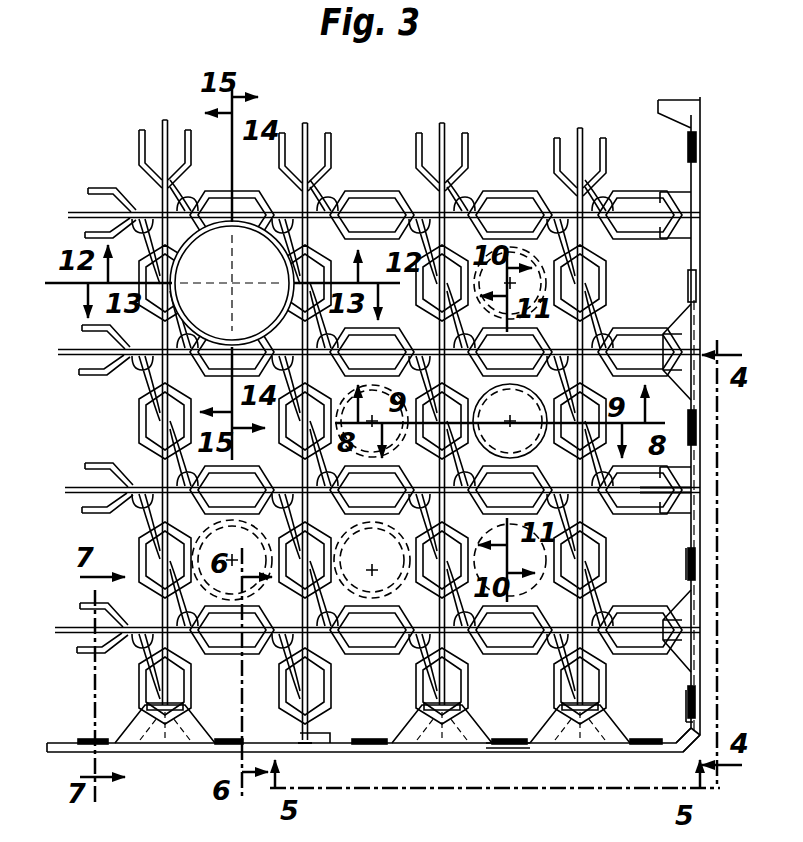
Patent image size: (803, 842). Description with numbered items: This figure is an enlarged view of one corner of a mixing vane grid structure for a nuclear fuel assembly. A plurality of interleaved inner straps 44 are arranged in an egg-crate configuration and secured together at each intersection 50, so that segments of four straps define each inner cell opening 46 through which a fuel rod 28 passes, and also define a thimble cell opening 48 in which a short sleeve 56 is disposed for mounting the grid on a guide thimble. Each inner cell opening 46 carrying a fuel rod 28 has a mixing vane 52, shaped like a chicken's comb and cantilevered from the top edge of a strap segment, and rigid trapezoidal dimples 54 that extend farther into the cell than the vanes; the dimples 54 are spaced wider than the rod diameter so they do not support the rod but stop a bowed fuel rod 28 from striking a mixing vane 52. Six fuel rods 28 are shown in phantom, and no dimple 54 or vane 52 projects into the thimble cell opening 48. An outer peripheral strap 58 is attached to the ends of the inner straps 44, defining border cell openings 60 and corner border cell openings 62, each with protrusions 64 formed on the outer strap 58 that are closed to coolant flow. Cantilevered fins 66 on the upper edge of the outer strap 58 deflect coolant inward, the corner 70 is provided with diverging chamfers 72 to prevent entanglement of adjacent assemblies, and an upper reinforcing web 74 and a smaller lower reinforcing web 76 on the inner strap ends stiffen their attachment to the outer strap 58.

The fuel rod 28 is at (560, 320).
The inner strap 44 is at (447, 133).
The inner cell opening 46 is at (590, 342).
The thimble cell opening 48 is at (148, 213).
The intersection 50 is at (590, 240).
The mixing vane 52 is at (460, 188).
The dimple 54 is at (498, 198).
The sleeve 56 is at (160, 190).
The outer peripheral strap 58 is at (701, 180).
The border cell opening 60 is at (662, 592).
The corner border cell opening 62 is at (695, 700).
The protrusion 64 is at (698, 148).
The fin 66 is at (685, 612).
The corner 70 is at (712, 780).
The chamfer 72 is at (697, 735).
The upper reinforcing web 74 is at (700, 492).
The lower reinforcing web 76 is at (690, 469).